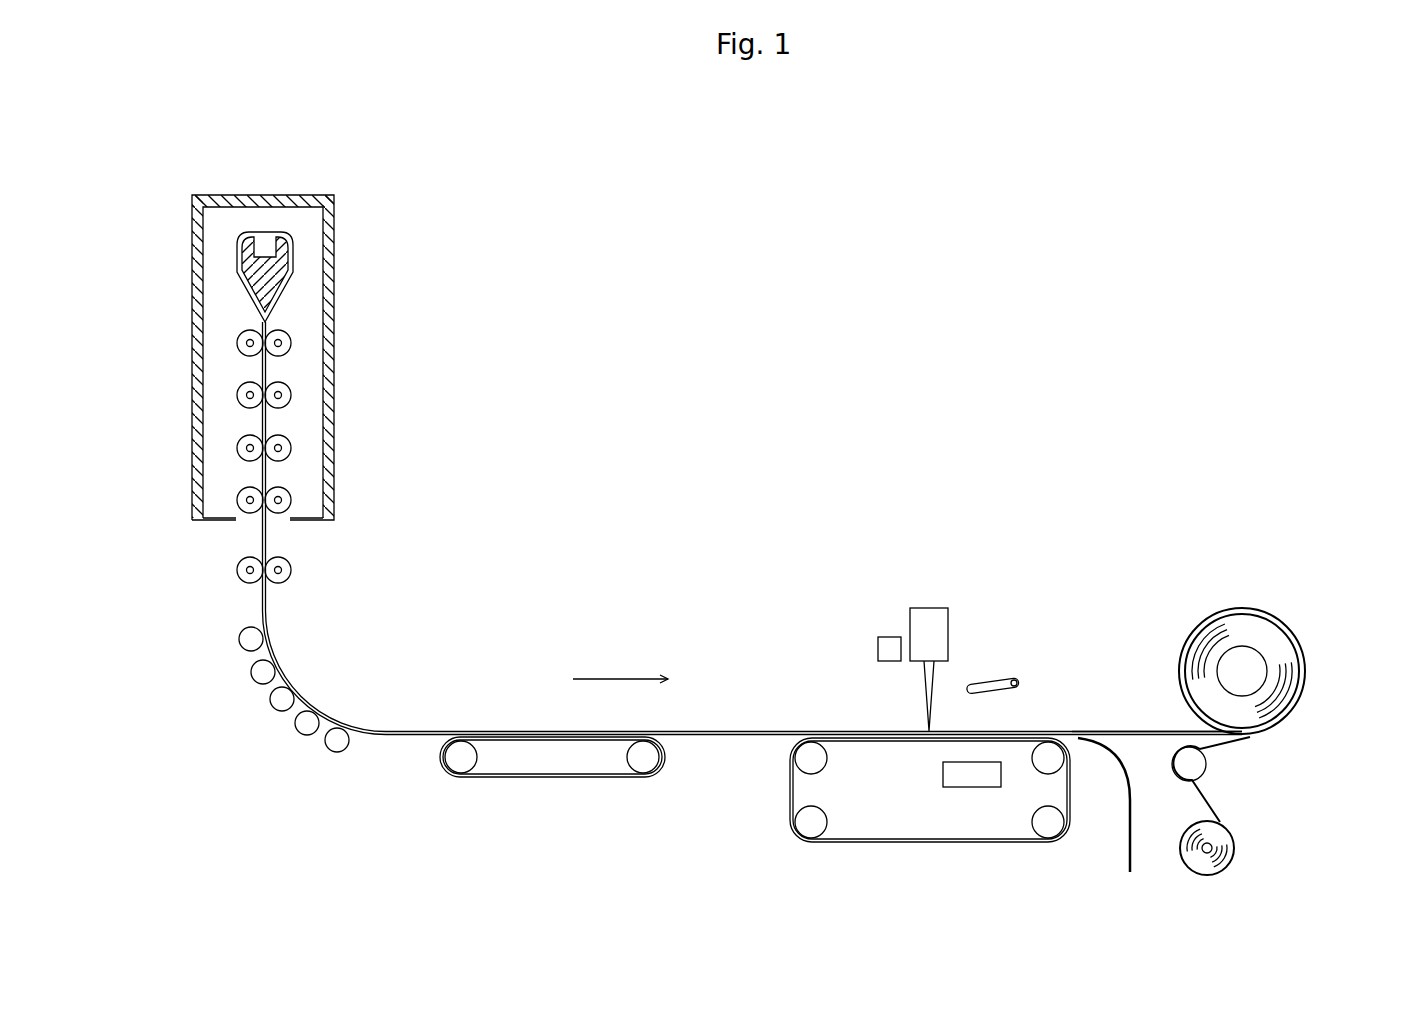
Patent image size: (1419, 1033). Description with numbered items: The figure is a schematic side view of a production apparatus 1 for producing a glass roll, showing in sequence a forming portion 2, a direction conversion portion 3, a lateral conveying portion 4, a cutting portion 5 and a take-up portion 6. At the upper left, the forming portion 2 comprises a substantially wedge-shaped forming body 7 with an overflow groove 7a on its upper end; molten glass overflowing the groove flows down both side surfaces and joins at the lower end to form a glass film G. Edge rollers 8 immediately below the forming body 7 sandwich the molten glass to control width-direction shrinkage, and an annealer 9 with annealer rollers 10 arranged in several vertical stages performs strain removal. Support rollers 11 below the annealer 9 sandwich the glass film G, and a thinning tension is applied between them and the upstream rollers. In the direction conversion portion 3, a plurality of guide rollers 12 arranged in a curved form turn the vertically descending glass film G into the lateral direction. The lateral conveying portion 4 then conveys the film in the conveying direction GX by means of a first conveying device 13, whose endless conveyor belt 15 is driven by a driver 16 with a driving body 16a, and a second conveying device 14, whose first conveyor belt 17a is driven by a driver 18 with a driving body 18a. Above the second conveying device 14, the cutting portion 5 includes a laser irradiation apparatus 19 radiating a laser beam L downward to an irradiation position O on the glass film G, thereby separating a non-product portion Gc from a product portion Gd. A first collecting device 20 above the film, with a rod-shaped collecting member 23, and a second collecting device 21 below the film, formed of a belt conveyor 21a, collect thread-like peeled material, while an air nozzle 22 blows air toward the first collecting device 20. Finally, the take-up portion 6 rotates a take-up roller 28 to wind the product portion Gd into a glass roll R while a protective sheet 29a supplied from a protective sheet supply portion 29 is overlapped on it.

The production apparatus 1 is at (968, 228).
The forming portion 2 is at (368, 222).
The direction conversion portion 3 is at (258, 712).
The lateral conveying portion 4 is at (522, 848).
The cutting portion 5 is at (994, 594).
The take-up portion 6 is at (1279, 605).
The forming body 7 is at (265, 296).
The overflow groove 7a is at (261, 252).
The edge rollers 8 is at (292, 342).
The annealer 9 is at (226, 381).
The annealer rollers 10 is at (292, 393).
The support rollers 11 is at (292, 571).
The guide rollers 12 is at (240, 639).
The first conveying device 13 is at (565, 786).
The second conveying device 14 is at (835, 855).
The conveyor belt 15 is at (486, 778).
The driver 16 is at (619, 770).
The driving body 16a is at (641, 770).
The first conveyor belt 17a is at (875, 845).
The driver 18 is at (1034, 776).
The driving body 18a is at (1062, 762).
The laser irradiation apparatus 19 is at (931, 608).
The first collecting device 20 is at (1028, 662).
The second collecting device 21 is at (960, 795).
The belt conveyor 21a is at (993, 790).
The air nozzle 22 is at (878, 650).
The collecting member 23 is at (1000, 698).
The take-up roller 28 is at (1257, 667).
The protective sheet supply portion 29 is at (1197, 882).
The protective sheet 29a is at (1200, 797).
The glass film G is at (267, 418).
The conveying direction GX is at (620, 664).
The product portion Gd is at (1129, 727).
The non-product portion Gc is at (1120, 858).
The laser beam L is at (926, 682).
The irradiation position O is at (928, 731).
The glass roll R is at (1233, 607).